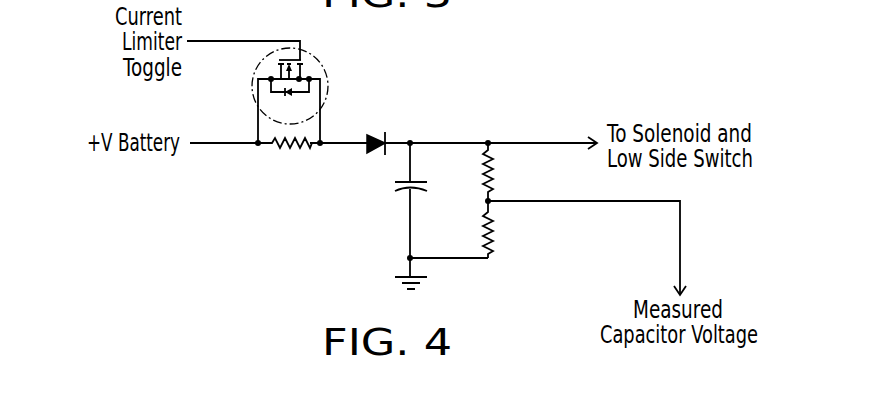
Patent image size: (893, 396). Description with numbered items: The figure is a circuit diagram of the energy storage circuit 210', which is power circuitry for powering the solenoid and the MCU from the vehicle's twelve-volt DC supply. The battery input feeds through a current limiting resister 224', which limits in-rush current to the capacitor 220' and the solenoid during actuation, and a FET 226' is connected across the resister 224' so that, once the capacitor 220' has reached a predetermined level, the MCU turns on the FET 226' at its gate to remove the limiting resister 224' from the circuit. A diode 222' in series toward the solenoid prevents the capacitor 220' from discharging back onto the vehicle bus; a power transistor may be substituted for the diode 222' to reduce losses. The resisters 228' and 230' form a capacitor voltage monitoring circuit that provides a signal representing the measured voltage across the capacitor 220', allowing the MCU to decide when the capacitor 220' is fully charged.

The energy storage circuit 210' is at (470, 168).
The capacitor 220' is at (387, 200).
The diode 222' is at (400, 112).
The current limiting resister 224' is at (276, 181).
The FET 226' is at (247, 95).
The resister 228' is at (520, 172).
The resister 230' is at (520, 236).